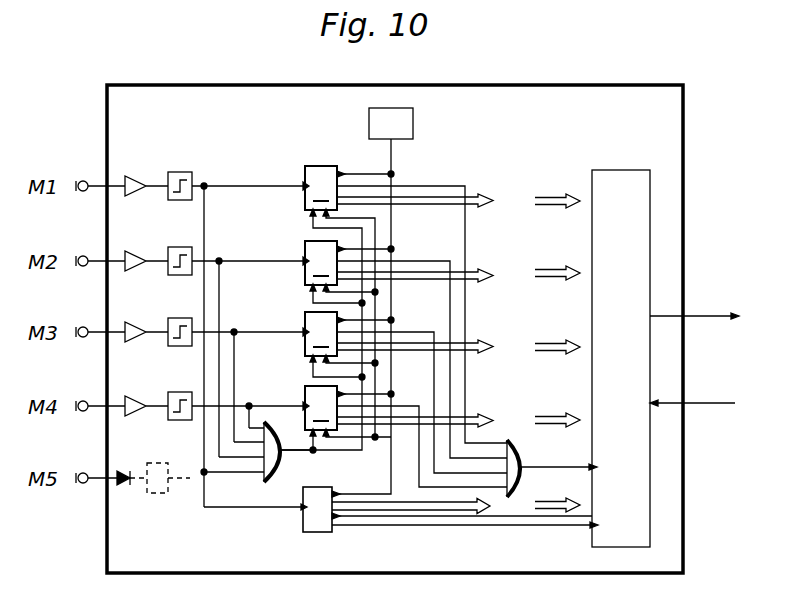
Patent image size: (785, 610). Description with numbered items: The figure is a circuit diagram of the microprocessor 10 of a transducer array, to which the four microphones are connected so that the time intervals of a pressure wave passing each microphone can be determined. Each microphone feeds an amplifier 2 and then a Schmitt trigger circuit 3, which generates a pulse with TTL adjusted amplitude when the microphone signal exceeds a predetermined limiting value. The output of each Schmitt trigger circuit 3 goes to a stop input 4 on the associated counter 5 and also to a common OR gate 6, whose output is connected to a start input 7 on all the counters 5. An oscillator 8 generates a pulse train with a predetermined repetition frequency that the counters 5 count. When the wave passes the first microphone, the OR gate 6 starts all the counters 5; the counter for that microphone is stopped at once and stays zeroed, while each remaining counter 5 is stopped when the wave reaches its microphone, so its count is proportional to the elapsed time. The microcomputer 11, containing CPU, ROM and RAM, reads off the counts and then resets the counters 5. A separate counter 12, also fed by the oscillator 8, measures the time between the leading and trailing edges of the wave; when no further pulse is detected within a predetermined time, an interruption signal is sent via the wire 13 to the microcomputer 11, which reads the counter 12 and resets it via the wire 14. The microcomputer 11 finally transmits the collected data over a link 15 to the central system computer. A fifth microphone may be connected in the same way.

The amplifier 2 is at (133, 395).
The Schmitt trigger circuit 3 is at (188, 392).
The stop input 4 is at (301, 404).
The counter 5 is at (406, 326).
The OR gate 6 is at (265, 473).
The start input 7 is at (311, 437).
The oscillator 8 is at (413, 127).
The microprocessor 10 is at (540, 102).
The microcomputer 11 is at (618, 177).
The counter 12 is at (322, 527).
The wire 13 is at (503, 527).
The wire 14 is at (450, 517).
The link 15 is at (700, 404).